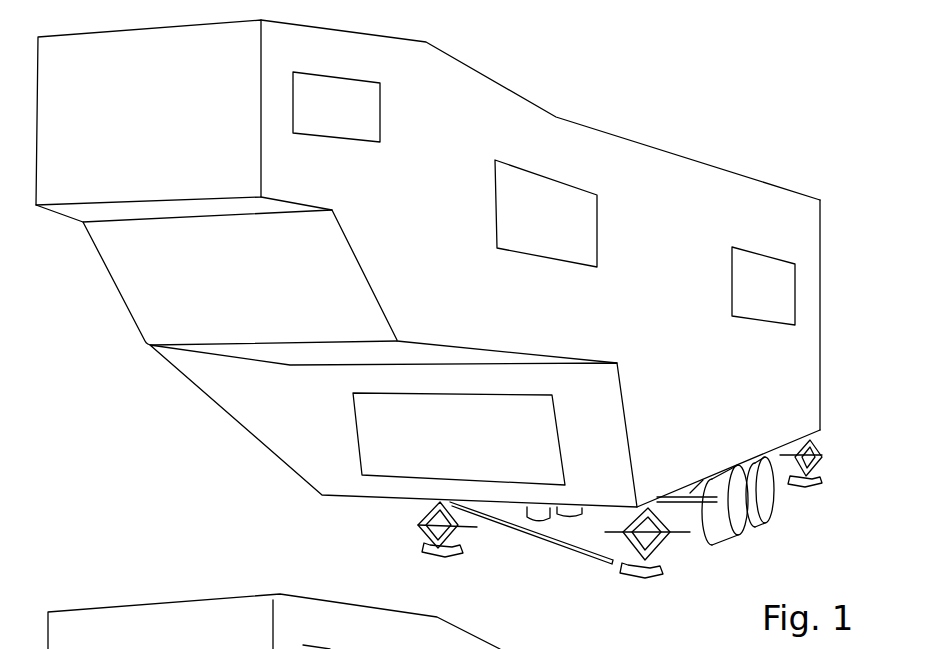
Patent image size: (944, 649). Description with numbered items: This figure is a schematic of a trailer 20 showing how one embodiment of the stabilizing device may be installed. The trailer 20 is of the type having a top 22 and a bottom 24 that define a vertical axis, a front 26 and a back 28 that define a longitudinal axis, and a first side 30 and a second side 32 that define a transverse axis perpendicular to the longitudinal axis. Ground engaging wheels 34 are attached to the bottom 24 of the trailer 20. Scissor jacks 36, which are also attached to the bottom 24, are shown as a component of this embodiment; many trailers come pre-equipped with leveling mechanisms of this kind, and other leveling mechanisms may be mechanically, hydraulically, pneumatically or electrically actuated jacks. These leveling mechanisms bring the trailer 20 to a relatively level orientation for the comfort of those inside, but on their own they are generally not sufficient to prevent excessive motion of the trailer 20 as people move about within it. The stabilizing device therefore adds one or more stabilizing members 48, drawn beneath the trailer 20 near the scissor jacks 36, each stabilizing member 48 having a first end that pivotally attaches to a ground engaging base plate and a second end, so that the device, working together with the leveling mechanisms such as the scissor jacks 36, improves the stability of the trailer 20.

The trailer 20 is at (523, 68).
The top 22 is at (647, 145).
The bottom 24 is at (707, 530).
The front 26 is at (148, 120).
The back 28 is at (822, 273).
The first side 30 is at (738, 397).
The second side 32 is at (115, 290).
The ground engaging wheels 34 is at (762, 520).
The scissor jacks 36 is at (827, 460).
The stabilizing member 48 is at (527, 530).